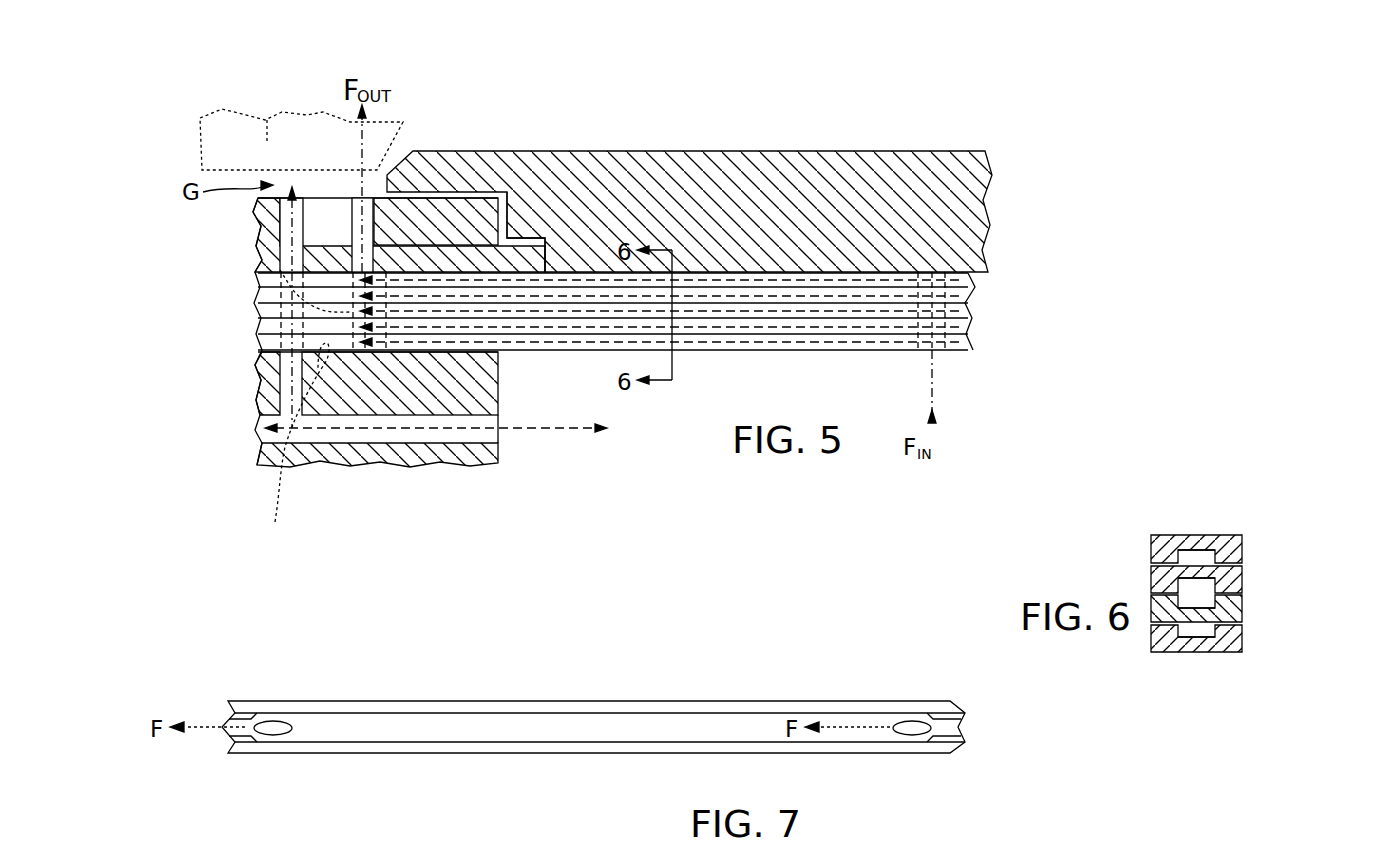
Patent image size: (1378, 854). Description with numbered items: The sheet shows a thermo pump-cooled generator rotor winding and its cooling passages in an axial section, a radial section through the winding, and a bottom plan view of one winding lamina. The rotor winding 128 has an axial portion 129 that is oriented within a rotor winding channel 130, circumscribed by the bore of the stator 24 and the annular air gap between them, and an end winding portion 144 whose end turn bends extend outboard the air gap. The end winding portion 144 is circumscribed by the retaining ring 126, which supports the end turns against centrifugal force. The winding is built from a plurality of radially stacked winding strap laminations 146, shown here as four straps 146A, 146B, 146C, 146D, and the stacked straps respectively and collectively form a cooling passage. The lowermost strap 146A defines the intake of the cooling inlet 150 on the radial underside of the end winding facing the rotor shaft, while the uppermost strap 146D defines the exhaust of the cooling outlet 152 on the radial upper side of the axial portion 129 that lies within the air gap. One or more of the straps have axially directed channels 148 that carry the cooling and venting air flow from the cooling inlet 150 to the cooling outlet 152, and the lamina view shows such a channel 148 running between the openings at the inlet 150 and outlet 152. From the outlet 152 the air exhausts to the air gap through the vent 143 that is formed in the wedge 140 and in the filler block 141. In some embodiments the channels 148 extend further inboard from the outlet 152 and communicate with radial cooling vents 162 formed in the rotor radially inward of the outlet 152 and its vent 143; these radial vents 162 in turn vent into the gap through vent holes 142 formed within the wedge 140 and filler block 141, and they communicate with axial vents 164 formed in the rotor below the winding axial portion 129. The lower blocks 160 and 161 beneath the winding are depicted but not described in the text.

In FIG. 5, the stator 24 is at (267, 120).
In FIG. 5, the retaining ring 126 is at (740, 190).
In FIG. 5, the rotor winding 128 is at (708, 400).
In FIG. 6, the rotor winding 128 is at (1124, 560).
In FIG. 5, the axial portion of rotor winding 129 is at (250, 273).
In FIG. 5, the rotor winding channel 130 is at (303, 410).
In FIG. 5, the wedge 140 is at (438, 230).
In FIG. 5, the filler block 141 is at (522, 258).
In FIG. 5, the vent hole 142 is at (262, 214).
In FIG. 5, the vent 143 is at (355, 223).
In FIG. 5, the end winding portion 144 is at (988, 272).
In FIG. 7, the winding strap lamination 146 is at (423, 772).
In FIG. 5, the lowermost winding strap lamination 146A is at (967, 357).
In FIG. 6, the lowermost winding strap lamination 146A is at (1237, 652).
In FIG. 5, the winding strap lamination 146B is at (963, 325).
In FIG. 6, the winding strap lamination 146B is at (1242, 613).
In FIG. 5, the winding strap lamination 146C is at (957, 295).
In FIG. 6, the winding strap lamination 146C is at (1242, 578).
In FIG. 5, the uppermost winding strap lamination 146D is at (958, 278).
In FIG. 6, the uppermost winding strap lamination 146D is at (1240, 560).
In FIG. 5, the channel 148 is at (953, 280).
In FIG. 6, the channel 148 is at (1190, 552).
In FIG. 7, the channel 148 is at (480, 723).
In FIG. 5, the cooling inlet 150 is at (937, 355).
In FIG. 7, the cooling inlet 150 is at (923, 731).
In FIG. 5, the cooling outlet 152 is at (260, 267).
In FIG. 7, the cooling outlet 152 is at (268, 735).
In FIG. 5, the lower wall block 160 is at (498, 420).
In FIG. 5, the bottom wall 161 is at (498, 448).
In FIG. 5, the radial cooling vent 162 is at (260, 352).
In FIG. 5, the axial vent 164 is at (262, 428).